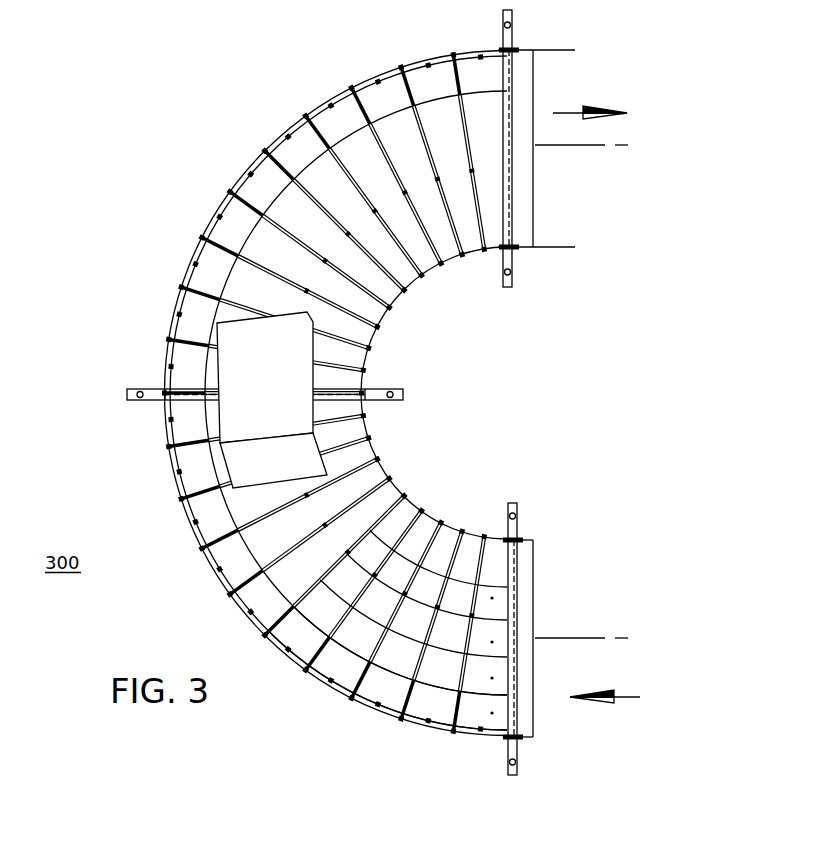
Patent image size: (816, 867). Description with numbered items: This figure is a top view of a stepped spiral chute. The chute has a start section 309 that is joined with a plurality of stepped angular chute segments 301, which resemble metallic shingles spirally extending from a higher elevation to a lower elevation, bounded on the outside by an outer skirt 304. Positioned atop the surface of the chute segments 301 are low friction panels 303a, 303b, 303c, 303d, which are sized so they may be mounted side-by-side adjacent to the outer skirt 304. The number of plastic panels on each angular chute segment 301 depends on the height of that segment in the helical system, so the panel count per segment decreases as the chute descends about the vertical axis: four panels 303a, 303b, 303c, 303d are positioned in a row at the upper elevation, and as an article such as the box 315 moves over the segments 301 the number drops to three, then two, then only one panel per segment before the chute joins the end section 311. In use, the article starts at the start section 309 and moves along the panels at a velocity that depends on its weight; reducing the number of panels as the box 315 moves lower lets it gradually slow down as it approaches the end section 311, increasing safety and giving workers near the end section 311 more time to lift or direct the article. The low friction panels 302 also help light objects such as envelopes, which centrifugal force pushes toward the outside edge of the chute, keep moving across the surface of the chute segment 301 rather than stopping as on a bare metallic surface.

The stepped angular chute segments 301 is at (350, 488).
The low friction panels 302 is at (266, 122).
The low friction panel 303a is at (383, 695).
The low friction panel 303b is at (445, 670).
The low friction panel 303c is at (455, 635).
The low friction panel 303d is at (458, 597).
The outer skirt 304 is at (325, 688).
The start section 309 is at (520, 567).
The end section 311 is at (523, 104).
The box 315 is at (237, 372).